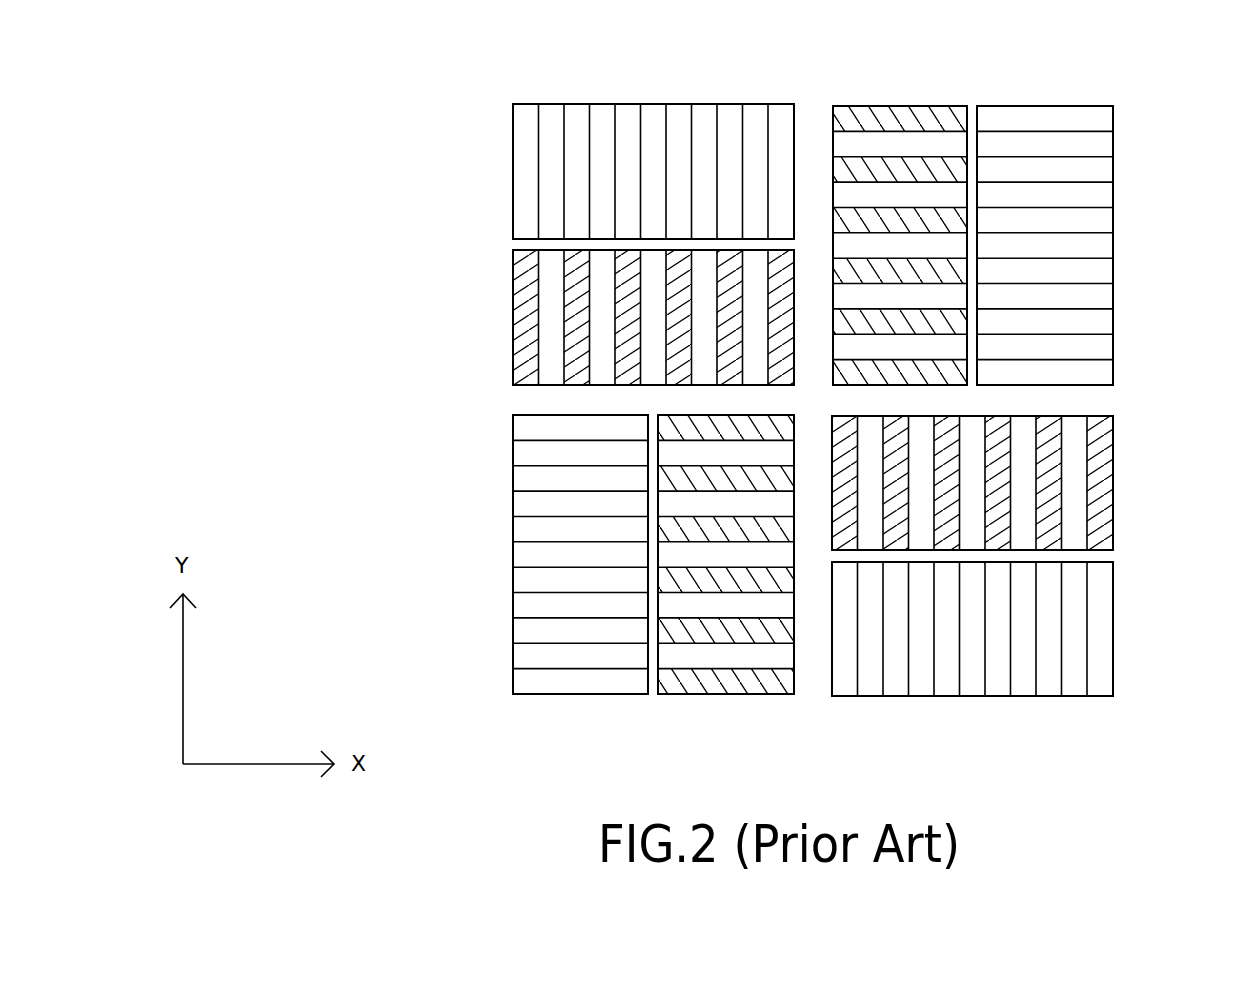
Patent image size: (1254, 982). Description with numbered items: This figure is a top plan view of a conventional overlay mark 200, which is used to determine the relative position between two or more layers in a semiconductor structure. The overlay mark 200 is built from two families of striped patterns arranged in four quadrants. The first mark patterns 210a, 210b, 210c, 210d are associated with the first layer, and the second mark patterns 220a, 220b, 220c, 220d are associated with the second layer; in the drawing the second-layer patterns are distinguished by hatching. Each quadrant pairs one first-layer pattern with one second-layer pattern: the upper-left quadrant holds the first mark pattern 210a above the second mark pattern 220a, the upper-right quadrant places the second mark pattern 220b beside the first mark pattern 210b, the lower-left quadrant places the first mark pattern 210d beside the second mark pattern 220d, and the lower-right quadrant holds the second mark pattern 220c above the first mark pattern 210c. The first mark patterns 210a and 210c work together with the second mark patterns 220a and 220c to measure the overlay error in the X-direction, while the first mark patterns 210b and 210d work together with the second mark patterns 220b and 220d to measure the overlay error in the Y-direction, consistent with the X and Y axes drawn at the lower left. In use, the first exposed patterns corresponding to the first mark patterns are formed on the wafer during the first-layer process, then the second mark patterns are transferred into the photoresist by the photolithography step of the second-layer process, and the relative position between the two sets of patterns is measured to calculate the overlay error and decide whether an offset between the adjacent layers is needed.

The overlay mark 200 is at (250, 131).
The first mark pattern 210a is at (600, 104).
The second mark pattern 220a is at (513, 310).
The first mark pattern 210b is at (1113, 141).
The second mark pattern 220b is at (895, 106).
The first mark pattern 210c is at (1070, 697).
The second mark pattern 220c is at (1113, 486).
The first mark pattern 210d is at (513, 605).
The second mark pattern 220d is at (775, 697).